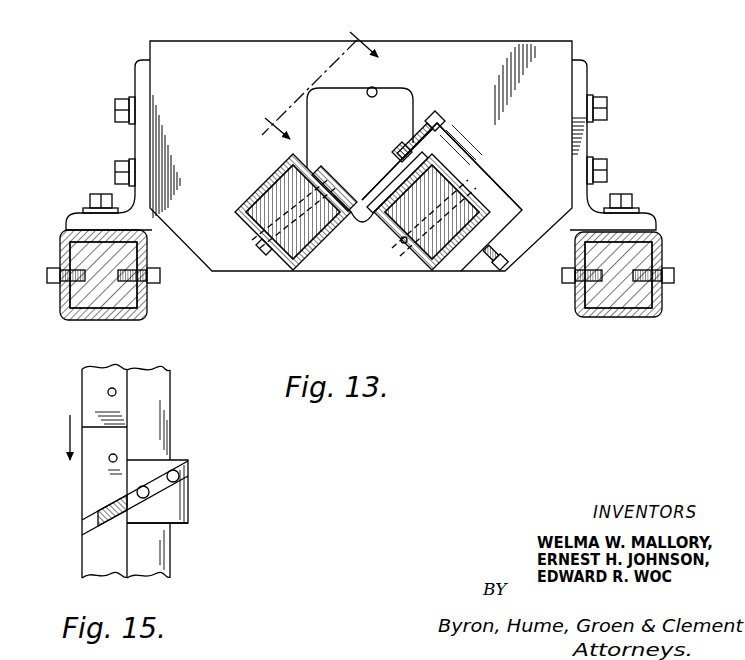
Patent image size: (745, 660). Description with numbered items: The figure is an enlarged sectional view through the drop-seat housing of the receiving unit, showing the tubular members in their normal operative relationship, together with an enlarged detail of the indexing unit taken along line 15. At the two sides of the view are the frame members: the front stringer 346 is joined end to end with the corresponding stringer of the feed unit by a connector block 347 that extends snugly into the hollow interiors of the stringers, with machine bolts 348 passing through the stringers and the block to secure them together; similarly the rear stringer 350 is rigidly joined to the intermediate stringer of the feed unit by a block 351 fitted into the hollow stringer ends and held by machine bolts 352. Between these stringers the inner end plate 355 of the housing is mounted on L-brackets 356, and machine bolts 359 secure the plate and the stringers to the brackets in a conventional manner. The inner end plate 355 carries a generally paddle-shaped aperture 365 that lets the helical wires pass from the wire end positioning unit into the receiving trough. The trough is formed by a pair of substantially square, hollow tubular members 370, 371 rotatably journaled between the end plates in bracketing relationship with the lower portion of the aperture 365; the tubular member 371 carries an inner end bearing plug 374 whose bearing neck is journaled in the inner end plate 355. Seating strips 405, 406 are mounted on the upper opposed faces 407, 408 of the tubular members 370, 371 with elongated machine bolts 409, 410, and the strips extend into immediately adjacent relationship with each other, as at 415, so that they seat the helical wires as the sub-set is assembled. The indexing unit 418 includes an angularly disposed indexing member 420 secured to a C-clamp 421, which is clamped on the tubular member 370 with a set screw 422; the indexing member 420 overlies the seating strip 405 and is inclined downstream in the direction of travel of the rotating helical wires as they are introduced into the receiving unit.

In FIG. 13, the inner end plate 355 is at (494, 50).
In FIG. 13, the L-brackets 356 is at (67, 222).
In FIG. 13, the machine bolts 359 is at (128, 158).
In FIG. 13, the rear stringer 350 is at (65, 313).
In FIG. 13, the block 351 is at (73, 257).
In FIG. 13, the machine bolts 352 is at (50, 279).
In FIG. 13, the front stringer 346 is at (660, 312).
In FIG. 13, the connector block 347 is at (650, 242).
In FIG. 13, the machine bolts 348 is at (566, 275).
In FIG. 13, the paddle-shaped aperture 365 is at (374, 88).
In FIG. 13, the section line 15— 15 is at (310, 76).
In FIG. 13, the inner end bearing plug 374 is at (272, 190).
In FIG. 13, the tubular member 371 is at (281, 266).
In FIG. 13, the tubular member 370 is at (440, 262).
In FIG. 15, the tubular member 370 is at (157, 410).
In FIG. 13, the machine bolts 410 is at (262, 238).
In FIG. 13, the upper opposed face 408 is at (313, 172).
In FIG. 13, the seating strip 405 is at (385, 168).
In FIG. 15, the seating strip 405 is at (108, 372).
In FIG. 13, the seating strip 406 is at (358, 196).
In FIG. 13, the immediately adjacent relationship 415 is at (357, 226).
In FIG. 13, the machine bolts 409 is at (388, 251).
In FIG. 15, the machine bolts 409 is at (108, 392).
In FIG. 13, the C-clamp 421 is at (496, 208).
In FIG. 15, the C-clamp 421 is at (173, 522).
In FIG. 13, the indexing unit 418 is at (487, 165).
In FIG. 15, the indexing unit 418 is at (193, 495).
In FIG. 13, the indexing member 420 is at (412, 130).
In FIG. 15, the indexing member 420 is at (92, 521).
In FIG. 13, the upper opposed face 407 is at (422, 135).
In FIG. 13, the set screw 422 is at (500, 266).